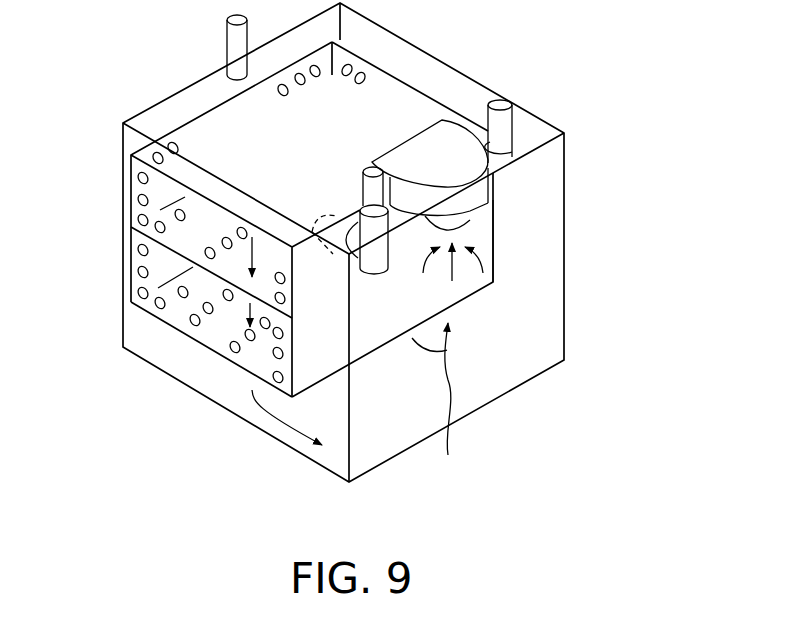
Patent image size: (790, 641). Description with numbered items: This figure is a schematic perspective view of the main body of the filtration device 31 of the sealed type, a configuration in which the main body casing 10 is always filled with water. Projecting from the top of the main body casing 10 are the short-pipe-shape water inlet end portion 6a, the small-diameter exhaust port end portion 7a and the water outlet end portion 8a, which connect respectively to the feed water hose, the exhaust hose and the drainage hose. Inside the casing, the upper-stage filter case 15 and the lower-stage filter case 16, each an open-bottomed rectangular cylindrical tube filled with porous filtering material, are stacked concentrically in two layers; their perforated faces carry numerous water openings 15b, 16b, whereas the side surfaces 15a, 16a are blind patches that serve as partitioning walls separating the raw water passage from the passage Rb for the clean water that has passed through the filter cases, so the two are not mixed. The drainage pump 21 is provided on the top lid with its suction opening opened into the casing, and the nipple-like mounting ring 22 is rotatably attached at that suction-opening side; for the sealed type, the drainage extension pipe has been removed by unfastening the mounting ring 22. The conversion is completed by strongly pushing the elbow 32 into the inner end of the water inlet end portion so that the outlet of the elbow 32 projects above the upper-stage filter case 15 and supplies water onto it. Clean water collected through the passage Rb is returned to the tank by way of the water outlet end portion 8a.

The main body casing 10 is at (568, 228).
The upper-stage filter case 15 is at (202, 206).
The side surface of upper filter case 15a is at (497, 197).
The upper plate holes 15b is at (180, 215).
The lower-stage filter case 16 is at (183, 349).
The side surface of lower filter case 16a is at (492, 252).
The lower plate holes 16b is at (183, 292).
The water inlet end portion 6a is at (377, 193).
The exhaust port end portion 7a is at (227, 45).
The water outlet end portion 8a is at (512, 127).
The drainage pump 21 is at (447, 137).
The nipple-like mounting ring 22 is at (420, 233).
The filtration device of the sealed type 31 is at (580, 340).
The elbow 32 is at (367, 267).
The passage for clean water Rb is at (437, 405).